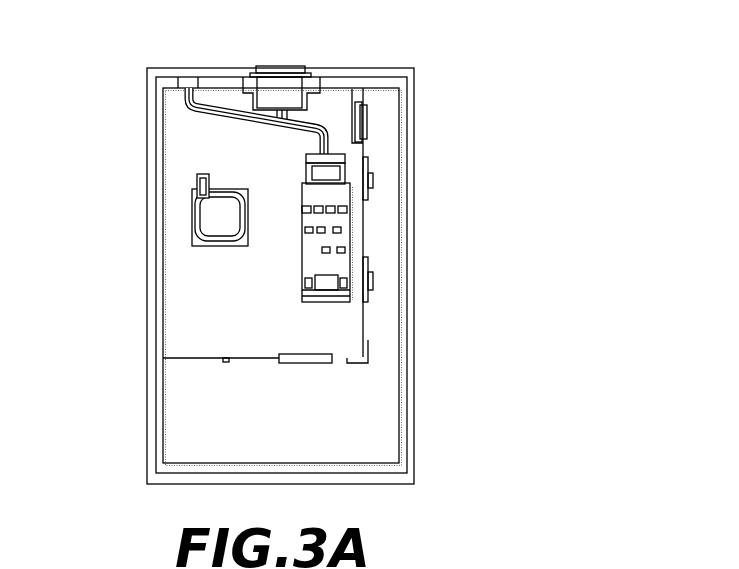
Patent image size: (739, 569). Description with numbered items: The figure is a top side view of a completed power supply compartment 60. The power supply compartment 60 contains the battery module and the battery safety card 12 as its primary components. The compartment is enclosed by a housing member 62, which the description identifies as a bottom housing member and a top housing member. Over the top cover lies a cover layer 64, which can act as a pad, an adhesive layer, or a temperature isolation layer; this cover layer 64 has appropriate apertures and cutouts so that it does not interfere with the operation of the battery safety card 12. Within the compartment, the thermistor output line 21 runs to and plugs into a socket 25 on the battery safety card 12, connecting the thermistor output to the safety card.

The power supply compartment 60 is at (447, 47).
The housing member 62 is at (410, 377).
The cover layer 64 is at (190, 307).
The thermistor output line 21 is at (212, 111).
The socket 25 is at (333, 174).
The battery safety card 12 is at (347, 220).